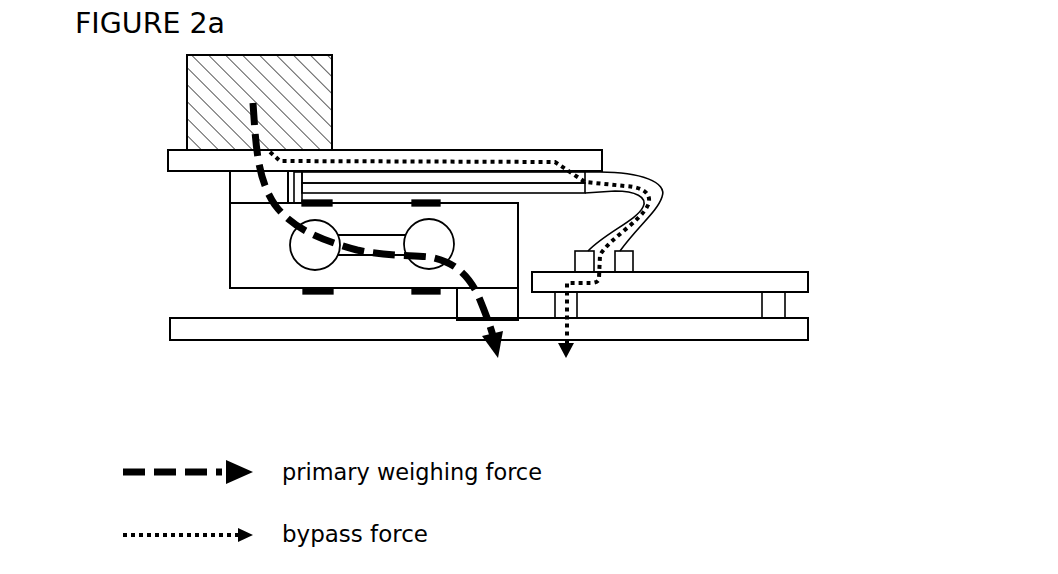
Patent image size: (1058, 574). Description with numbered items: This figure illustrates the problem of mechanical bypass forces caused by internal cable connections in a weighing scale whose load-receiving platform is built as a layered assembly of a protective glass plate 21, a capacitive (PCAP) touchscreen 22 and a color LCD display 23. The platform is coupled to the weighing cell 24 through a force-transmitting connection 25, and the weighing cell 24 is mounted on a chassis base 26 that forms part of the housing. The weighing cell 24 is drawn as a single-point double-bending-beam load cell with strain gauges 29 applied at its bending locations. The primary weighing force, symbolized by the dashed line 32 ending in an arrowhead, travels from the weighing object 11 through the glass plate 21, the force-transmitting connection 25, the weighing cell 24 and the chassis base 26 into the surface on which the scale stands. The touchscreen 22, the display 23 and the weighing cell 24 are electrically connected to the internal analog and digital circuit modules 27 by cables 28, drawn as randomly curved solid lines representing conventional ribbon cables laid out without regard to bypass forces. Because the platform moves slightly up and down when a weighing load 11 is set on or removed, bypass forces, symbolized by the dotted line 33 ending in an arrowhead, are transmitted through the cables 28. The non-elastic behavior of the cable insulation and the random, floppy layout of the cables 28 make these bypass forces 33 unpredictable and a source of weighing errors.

The weighing object 11 is at (300, 116).
The protective glass plate 21 is at (578, 160).
The capacitive (PCAP) touchscreen 22 is at (400, 178).
The color LCD display 23 is at (322, 188).
The weighing cell 24 is at (257, 240).
The force-transmitting connection 25 is at (247, 187).
The chassis base 26 is at (262, 333).
The analog and digital circuit modules 27 is at (582, 258).
The cables 28 is at (660, 193).
The strain gauges 29 is at (428, 207).
The primary weighing force 32 is at (312, 233).
The bypass forces 33 is at (565, 307).